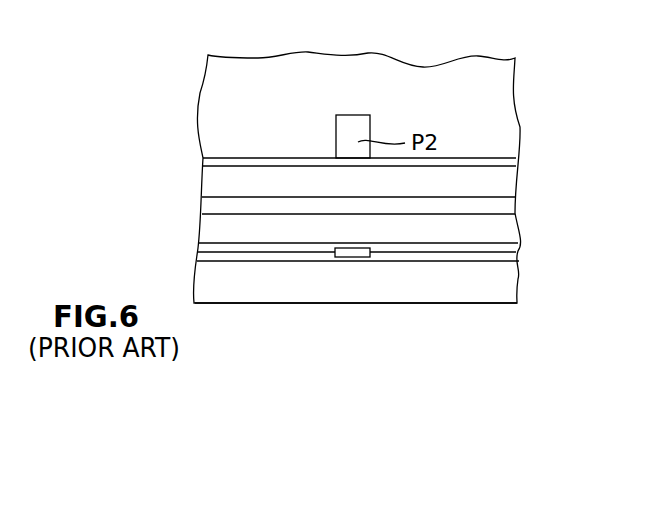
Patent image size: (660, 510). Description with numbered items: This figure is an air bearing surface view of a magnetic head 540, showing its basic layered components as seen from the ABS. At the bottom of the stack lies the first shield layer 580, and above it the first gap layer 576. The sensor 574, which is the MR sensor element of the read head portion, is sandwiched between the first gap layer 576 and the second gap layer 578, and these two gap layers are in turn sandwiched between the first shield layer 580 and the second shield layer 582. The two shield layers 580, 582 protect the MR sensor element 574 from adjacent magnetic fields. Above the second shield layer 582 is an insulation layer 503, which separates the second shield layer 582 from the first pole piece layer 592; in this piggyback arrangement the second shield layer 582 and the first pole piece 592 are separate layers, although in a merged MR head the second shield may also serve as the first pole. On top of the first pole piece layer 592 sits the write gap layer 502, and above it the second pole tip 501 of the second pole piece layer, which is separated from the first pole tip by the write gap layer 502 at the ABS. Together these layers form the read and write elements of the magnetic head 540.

The magnetic head 540 is at (530, 64).
The second pole tip 501 is at (342, 114).
The write gap layer 502 is at (263, 150).
The first pole piece layer 592 is at (202, 172).
The insulation layer 503 is at (498, 201).
The second shield layer 582 is at (195, 221).
The second gap layer 578 is at (467, 240).
The first gap layer 576 is at (255, 252).
The sensor 574 is at (345, 249).
The first shield layer 580 is at (497, 277).